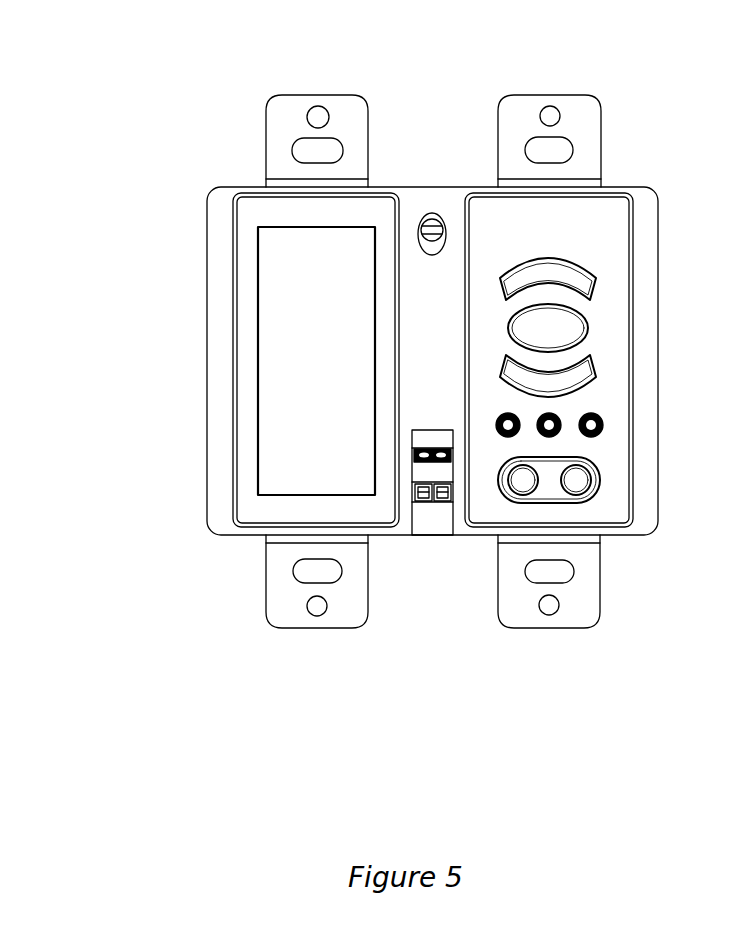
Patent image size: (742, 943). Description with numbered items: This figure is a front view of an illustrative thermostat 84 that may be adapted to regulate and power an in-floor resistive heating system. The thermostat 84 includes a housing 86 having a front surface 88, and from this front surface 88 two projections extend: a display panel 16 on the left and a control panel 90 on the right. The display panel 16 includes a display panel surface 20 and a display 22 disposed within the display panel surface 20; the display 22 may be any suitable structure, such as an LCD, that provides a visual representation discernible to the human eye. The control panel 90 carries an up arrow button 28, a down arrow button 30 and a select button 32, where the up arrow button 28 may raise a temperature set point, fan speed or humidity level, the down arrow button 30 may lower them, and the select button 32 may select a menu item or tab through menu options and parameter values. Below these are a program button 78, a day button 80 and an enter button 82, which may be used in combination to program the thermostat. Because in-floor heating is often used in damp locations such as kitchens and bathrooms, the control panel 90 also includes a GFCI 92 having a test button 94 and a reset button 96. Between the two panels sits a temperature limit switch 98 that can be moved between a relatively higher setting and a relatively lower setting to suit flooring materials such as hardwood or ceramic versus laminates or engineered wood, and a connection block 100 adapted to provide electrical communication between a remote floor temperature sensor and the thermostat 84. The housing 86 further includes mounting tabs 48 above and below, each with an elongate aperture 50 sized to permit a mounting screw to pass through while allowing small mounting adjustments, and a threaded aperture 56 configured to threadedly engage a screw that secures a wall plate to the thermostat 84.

The display panel 16 is at (202, 286).
The display panel surface 20 is at (255, 510).
The display 22 is at (285, 407).
The up arrow button 28 is at (585, 282).
The down arrow button 30 is at (585, 378).
The select button 32 is at (573, 330).
The mounting tabs 48 is at (471, 342).
The aperture 50 is at (565, 154).
The threaded aperture 56 is at (555, 107).
The program button 78 is at (512, 423).
The day button 80 is at (551, 433).
The enter button 82 is at (591, 432).
The thermostat 84 is at (428, 64).
The housing 86 is at (645, 303).
The front surface 88 is at (445, 200).
The control panel 90 is at (608, 235).
The GFCI 92 is at (616, 518).
The test button 94 is at (522, 483).
The reset button 96 is at (578, 483).
The temperature limit switch 98 is at (428, 213).
The connection block 100 is at (433, 470).